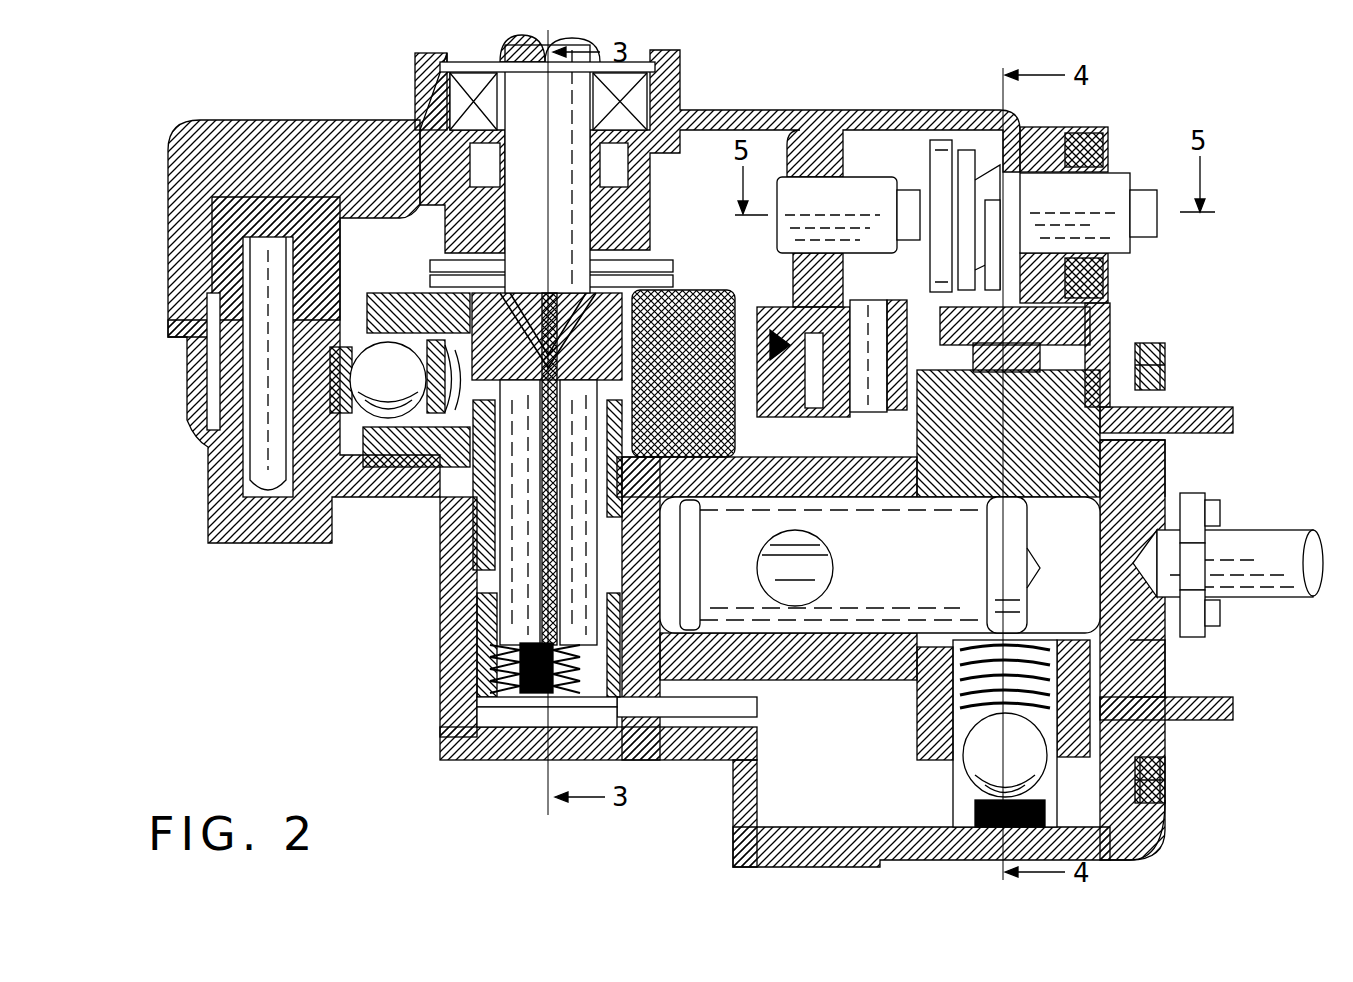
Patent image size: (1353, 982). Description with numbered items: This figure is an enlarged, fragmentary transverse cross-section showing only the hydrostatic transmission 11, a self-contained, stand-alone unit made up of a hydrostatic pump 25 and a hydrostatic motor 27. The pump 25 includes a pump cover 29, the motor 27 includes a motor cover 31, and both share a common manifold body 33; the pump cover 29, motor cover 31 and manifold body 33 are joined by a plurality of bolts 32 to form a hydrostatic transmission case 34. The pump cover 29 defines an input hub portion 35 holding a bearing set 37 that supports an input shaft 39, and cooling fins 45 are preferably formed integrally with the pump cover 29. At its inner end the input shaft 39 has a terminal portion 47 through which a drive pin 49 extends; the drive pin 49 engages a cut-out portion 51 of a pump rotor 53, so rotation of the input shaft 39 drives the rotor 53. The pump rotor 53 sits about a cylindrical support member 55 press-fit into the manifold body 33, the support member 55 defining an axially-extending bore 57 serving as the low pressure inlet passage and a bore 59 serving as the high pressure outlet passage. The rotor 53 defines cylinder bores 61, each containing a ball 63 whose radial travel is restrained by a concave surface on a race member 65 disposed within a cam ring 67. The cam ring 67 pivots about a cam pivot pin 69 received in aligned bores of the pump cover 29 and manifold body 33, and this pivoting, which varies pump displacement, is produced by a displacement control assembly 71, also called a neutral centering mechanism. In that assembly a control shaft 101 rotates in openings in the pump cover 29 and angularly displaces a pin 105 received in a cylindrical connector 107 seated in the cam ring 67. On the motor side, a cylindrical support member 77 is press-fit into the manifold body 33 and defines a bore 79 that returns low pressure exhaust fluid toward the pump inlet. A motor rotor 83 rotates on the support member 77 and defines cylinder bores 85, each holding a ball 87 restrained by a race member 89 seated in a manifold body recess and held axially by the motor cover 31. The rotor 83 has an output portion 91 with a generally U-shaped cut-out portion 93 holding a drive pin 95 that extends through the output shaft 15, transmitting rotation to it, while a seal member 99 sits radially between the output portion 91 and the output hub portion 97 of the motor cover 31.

The hydrostatic transmission 11 is at (306, 193).
The cooling fins 45 is at (178, 160).
The input hub portion 35 is at (418, 86).
The bearing set 37 is at (420, 147).
The hydrostatic pump 25 is at (887, 246).
The pump cover 29 is at (819, 128).
The displacement control assembly 71 is at (912, 130).
The hydrostatic transmission case 34 is at (1102, 118).
The control shaft 101 is at (1112, 184).
The input shaft 39 is at (570, 218).
The cut-out portion 51 is at (650, 262).
The drive pin 49 is at (445, 262).
The pump rotor 53 is at (386, 294).
The cylindrical connector 107 is at (779, 318).
The ball 63 is at (420, 380).
The terminal portion 47 is at (552, 332).
The bolts 32 is at (1158, 352).
The hydrostatic motor 27 is at (1184, 396).
The race member 65 is at (752, 410).
The pin 105 is at (876, 408).
The output portion 91 is at (1158, 481).
The drive pin 95 is at (1210, 500).
The output shaft 15 is at (1274, 540).
The cam ring 67 is at (215, 463).
The cylinder bores 61 is at (400, 476).
The cylindrical support member 55 is at (470, 510).
The bore 59 is at (583, 490).
The bore 79 is at (822, 560).
The cylindrical support member 77 is at (938, 576).
The cam pivot pin 69 is at (261, 490).
The bore 57 is at (495, 622).
The cut-out portion 93 is at (1215, 612).
The seal member 99 is at (1162, 686).
The output hub portion 97 is at (1172, 722).
The manifold body 33 is at (450, 738).
The cylinder bores 85 is at (950, 712).
The motor rotor 83 is at (922, 740).
The ball 87 is at (978, 778).
The race member 89 is at (972, 814).
The motor cover 31 is at (1135, 846).